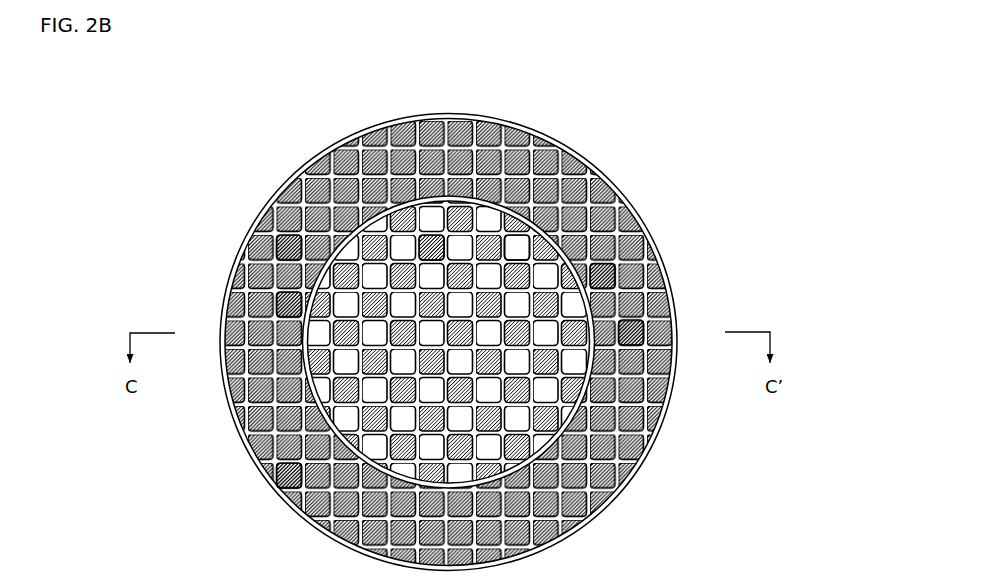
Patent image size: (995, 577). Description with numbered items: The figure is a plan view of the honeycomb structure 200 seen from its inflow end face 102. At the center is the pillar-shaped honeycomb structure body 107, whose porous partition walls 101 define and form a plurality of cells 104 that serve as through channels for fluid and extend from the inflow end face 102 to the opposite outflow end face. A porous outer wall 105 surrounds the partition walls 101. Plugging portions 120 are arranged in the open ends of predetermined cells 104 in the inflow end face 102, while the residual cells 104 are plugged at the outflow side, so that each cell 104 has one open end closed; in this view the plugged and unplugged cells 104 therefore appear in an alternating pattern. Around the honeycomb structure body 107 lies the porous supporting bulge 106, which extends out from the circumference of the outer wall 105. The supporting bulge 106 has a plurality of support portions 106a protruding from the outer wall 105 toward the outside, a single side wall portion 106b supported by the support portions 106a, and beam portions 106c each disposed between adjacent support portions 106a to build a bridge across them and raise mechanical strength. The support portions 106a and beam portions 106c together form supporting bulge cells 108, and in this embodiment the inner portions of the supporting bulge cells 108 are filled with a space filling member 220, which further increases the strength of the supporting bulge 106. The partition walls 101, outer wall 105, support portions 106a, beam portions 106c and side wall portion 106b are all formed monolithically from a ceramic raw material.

The honeycomb structure 200 is at (722, 76).
The partition walls 101 is at (475, 233).
The inflow end face 102 is at (360, 215).
The cells 104 is at (515, 245).
The outer wall 105 is at (568, 258).
The supporting bulge 106 is at (235, 404).
The support portions 106a is at (605, 292).
The side wall portion 106b is at (652, 447).
The beam portions 106c is at (615, 335).
The honeycomb structure body 107 is at (298, 248).
The supporting bulge cells 108 is at (287, 300).
The plugging portions 120 is at (432, 242).
The space filling member 220 is at (287, 478).